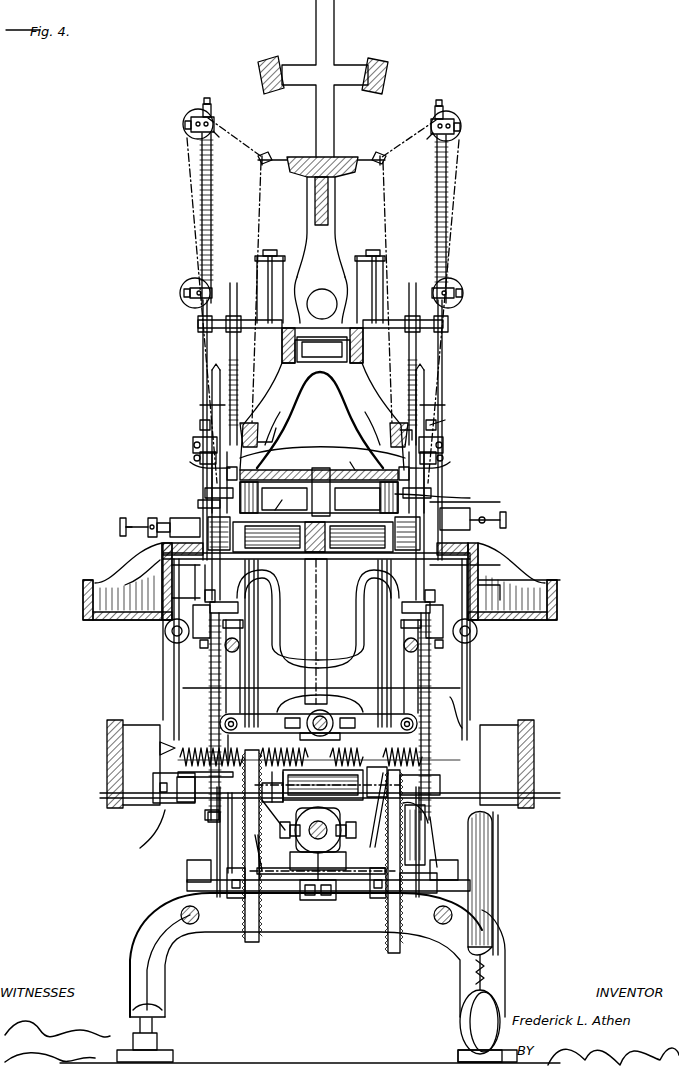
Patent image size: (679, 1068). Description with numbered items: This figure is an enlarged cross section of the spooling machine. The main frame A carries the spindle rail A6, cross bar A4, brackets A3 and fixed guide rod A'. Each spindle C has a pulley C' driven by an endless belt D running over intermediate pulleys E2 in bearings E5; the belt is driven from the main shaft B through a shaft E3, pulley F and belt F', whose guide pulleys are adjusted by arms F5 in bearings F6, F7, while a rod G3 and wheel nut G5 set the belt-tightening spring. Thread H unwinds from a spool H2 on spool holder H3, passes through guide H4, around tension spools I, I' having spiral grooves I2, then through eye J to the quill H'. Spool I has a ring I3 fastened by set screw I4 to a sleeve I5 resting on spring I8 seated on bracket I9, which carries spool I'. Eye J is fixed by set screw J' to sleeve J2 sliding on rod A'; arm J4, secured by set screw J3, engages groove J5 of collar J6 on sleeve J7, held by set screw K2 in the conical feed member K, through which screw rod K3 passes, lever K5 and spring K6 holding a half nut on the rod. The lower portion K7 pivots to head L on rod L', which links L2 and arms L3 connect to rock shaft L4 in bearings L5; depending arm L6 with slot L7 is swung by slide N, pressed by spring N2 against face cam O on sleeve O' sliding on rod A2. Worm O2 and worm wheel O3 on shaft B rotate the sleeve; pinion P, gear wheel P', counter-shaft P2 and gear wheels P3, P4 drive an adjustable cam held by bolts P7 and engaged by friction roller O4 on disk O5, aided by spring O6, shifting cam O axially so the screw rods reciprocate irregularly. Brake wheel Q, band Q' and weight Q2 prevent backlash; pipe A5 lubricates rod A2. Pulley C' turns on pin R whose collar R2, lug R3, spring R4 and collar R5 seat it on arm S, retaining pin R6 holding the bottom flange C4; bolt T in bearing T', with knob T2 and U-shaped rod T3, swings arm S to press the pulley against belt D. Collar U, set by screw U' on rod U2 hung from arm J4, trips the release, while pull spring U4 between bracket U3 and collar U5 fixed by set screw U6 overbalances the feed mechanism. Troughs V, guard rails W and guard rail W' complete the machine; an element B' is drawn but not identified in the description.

The main frame A is at (310, 659).
The guide rod A' is at (315, 478).
The transversely-extending guideway or rod A2 is at (207, 816).
The brackets A3 is at (190, 872).
The cross bar A4 is at (190, 888).
The pipe A5 is at (462, 720).
The spindle rail A6 is at (450, 553).
The main shaft B is at (261, 858).
The shaft B' is at (283, 898).
The spindle C is at (324, 435).
The pulley C' is at (330, 482).
The bottom flange C4 is at (281, 502).
The endless belt D is at (284, 499).
The intermediate pulleys E2 is at (319, 497).
The vertically-disposed shaft E3 is at (305, 470).
The bearings E5 is at (305, 570).
The pulley F is at (316, 639).
The belt F' is at (313, 537).
The arm F5 is at (172, 563).
The bearing F6 is at (165, 632).
The bearing F7 is at (200, 646).
The rod G3 is at (255, 900).
The wheel nut G5 is at (262, 900).
The thread H is at (320, 280).
The quill H' is at (346, 401).
The spool H2 is at (283, 258).
The spool holder H3 is at (335, 300).
The guide H4 is at (264, 155).
The tension spool I is at (321, 120).
The tension spool I' is at (316, 293).
The spiral groove I2 is at (190, 134).
The ring I3 is at (196, 136).
The set screw I4 is at (203, 124).
The sleeve I5 is at (214, 140).
The spring I8 is at (203, 220).
The bracket I9 is at (195, 280).
The eye J is at (296, 435).
The set screw J' is at (327, 442).
The sleeve J2 is at (203, 422).
The set screw J3 is at (193, 457).
The arm J4 is at (195, 465).
The annular groove J5 is at (347, 459).
The collar J6 is at (318, 487).
The sleeve J7 is at (328, 447).
The feed member K is at (280, 428).
The set screw K2 is at (312, 430).
The screw rod K3 is at (237, 368).
The lever K5 is at (435, 425).
The spring K6 is at (402, 404).
The lower non-threaded portion K7 is at (125, 565).
The head L is at (320, 649).
The longitudinally-extending rod L' is at (322, 666).
The links L2 is at (183, 688).
The arms L3 is at (268, 710).
The rock shaft L4 is at (348, 705).
The bearings L5 is at (300, 705).
The depending arm L6 is at (341, 729).
The slot L7 is at (268, 740).
The slide N is at (430, 825).
The spring N2 is at (185, 740).
The face cam O is at (322, 863).
The sleeve O' is at (356, 822).
The worm O2 is at (320, 818).
The worm wheel O3 is at (330, 880).
The friction roller O4 is at (290, 780).
The disk O5 is at (282, 838).
The spring O6 is at (430, 775).
The pinion P is at (332, 744).
The gear wheel P' is at (394, 881).
The counter-shaft P2 is at (370, 870).
The gear wheel P3 is at (260, 890).
The gear wheel P4 is at (218, 745).
The bolts P7 is at (170, 777).
The brake wheel Q is at (518, 883).
The brake band Q' is at (520, 883).
The weight Q2 is at (460, 1012).
The pin R is at (296, 600).
The collar R2 is at (470, 512).
The lug R3 is at (357, 499).
The spring R4 is at (314, 533).
The collar R5 is at (556, 572).
The angular retaining pin R6 is at (500, 502).
The arm S is at (128, 537).
The bolt T is at (148, 517).
The bearing T' is at (195, 508).
The knob T2 is at (150, 520).
The U-shaped rod T3 is at (470, 565).
The collar U is at (156, 582).
The set screw U' is at (154, 598).
The vertically-disposed rod U2 is at (500, 595).
The bracket U3 is at (225, 610).
The spring U4 is at (211, 700).
The collar U5 is at (217, 825).
The set screw U6 is at (205, 816).
The trough V is at (83, 608).
The guard rails W is at (320, 764).
The guard rail W' is at (459, 495).